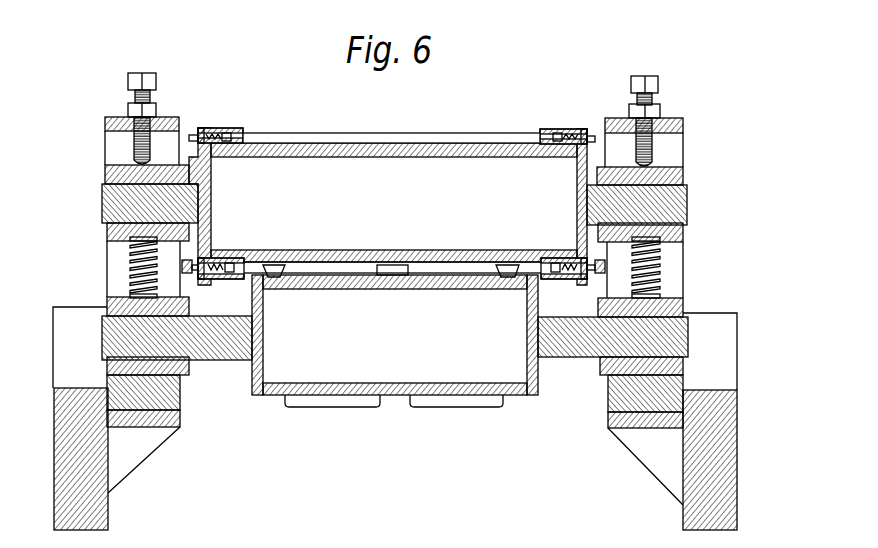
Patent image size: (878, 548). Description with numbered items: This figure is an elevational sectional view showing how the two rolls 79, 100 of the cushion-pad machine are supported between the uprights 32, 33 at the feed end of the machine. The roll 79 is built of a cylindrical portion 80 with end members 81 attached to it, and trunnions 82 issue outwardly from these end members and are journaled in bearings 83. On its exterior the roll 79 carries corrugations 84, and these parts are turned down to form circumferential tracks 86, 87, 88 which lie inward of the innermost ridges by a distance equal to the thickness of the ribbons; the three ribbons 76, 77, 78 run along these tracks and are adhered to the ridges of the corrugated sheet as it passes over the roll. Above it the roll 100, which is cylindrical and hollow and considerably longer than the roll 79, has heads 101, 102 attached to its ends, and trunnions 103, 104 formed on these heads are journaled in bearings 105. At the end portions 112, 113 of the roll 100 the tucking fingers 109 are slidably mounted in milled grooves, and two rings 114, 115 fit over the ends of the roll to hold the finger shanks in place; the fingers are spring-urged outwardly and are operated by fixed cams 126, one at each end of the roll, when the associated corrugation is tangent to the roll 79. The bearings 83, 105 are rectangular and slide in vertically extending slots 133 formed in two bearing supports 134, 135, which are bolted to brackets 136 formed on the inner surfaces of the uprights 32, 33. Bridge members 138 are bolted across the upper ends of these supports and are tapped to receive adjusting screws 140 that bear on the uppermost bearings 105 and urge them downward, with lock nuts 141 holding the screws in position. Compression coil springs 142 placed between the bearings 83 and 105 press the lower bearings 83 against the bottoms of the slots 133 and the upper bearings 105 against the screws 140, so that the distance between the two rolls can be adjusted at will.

The upright 32 is at (70, 445).
The upright 33 is at (740, 458).
The ribbon 76 is at (276, 283).
The ribbon 77 is at (383, 281).
The ribbon 78 is at (508, 281).
The roll 79 is at (278, 384).
The cylindrical portion 80 is at (360, 388).
The end member 81 is at (258, 335).
The trunnion 82 is at (213, 350).
The bearing 83 is at (107, 302).
The corrugation 84 is at (440, 273).
The circumferential track 86 is at (263, 396).
The circumferential track 87 is at (393, 402).
The circumferential track 88 is at (520, 400).
The roll 100 is at (393, 143).
The head 101 is at (211, 230).
The head 102 is at (579, 182).
The trunnion 103 is at (112, 197).
The trunnion 104 is at (688, 212).
The bearing 105 is at (112, 172).
The finger 109 is at (258, 140).
The end portion 112 is at (232, 150).
The end portion 113 is at (555, 162).
The ring 114 is at (222, 128).
The ring 115 is at (555, 128).
The fixed cam 126 is at (196, 272).
The vertically extending slot 133 is at (165, 140).
The bearing support 134 is at (107, 250).
The bearing support 135 is at (686, 152).
The bracket 136 is at (133, 418).
The bridge member 138 is at (115, 119).
The adjusting screw 140 is at (138, 78).
The lock nut 141 is at (152, 108).
The compression coil spring 142 is at (130, 274).